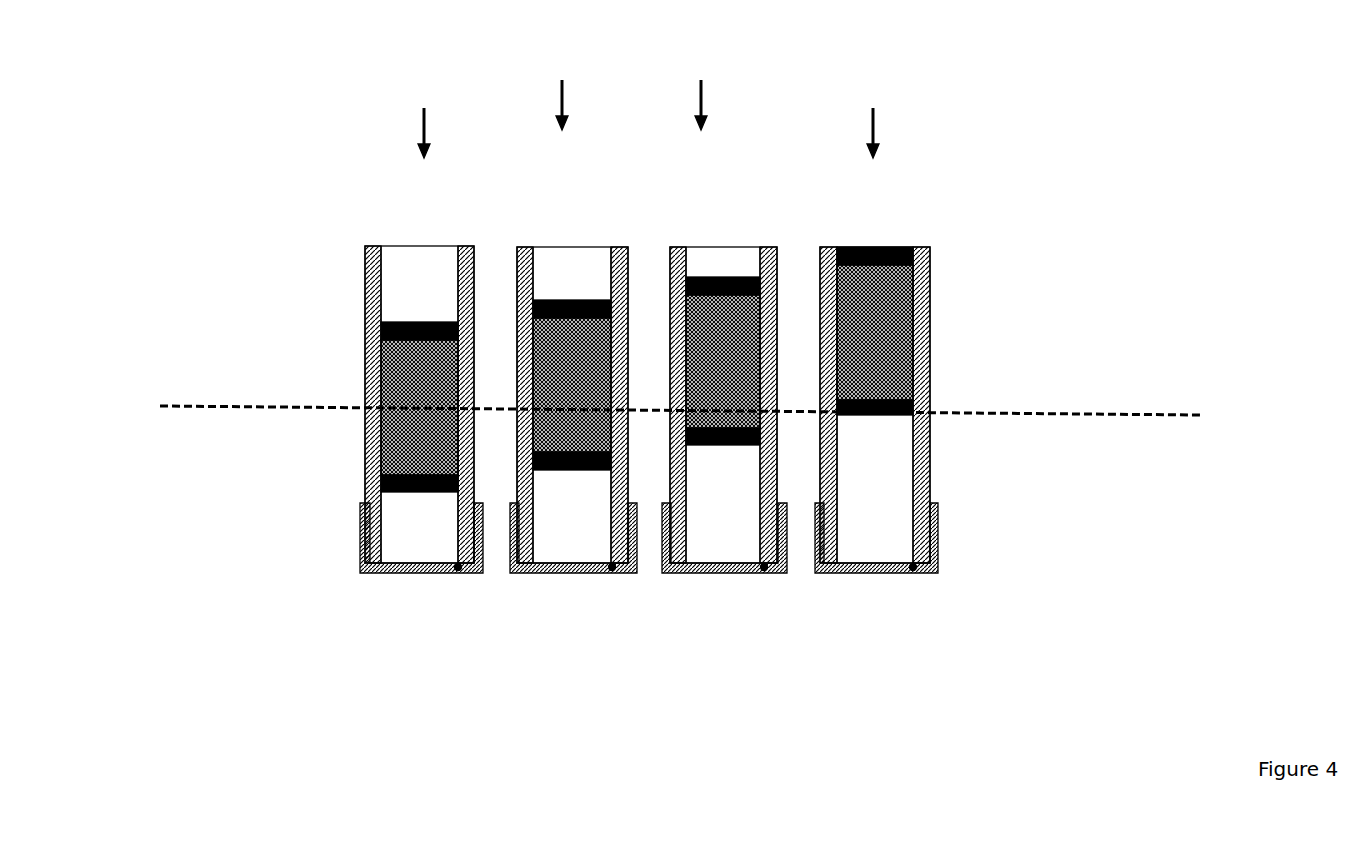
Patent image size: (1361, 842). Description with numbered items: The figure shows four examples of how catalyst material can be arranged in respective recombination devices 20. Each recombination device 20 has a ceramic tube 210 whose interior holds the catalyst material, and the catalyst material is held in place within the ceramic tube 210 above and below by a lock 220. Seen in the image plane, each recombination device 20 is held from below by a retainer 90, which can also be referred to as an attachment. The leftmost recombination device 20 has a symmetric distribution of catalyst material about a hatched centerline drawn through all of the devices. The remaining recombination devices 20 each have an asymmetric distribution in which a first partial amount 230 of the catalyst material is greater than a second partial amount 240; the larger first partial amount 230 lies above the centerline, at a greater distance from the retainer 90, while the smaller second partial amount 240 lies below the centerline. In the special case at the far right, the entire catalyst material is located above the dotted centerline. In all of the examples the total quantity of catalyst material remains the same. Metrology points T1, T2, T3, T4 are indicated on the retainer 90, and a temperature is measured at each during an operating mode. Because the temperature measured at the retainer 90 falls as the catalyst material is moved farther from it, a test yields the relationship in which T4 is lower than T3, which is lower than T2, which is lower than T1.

The recombination device 20 is at (646, 99).
The retainer 90 is at (838, 576).
The ceramic tube 210 is at (468, 263).
The lock 220 is at (878, 426).
The first partial amount 230 is at (448, 358).
The second partial amount 240 is at (541, 435).
The metrology point T1 is at (458, 567).
The metrology point T2 is at (612, 567).
The metrology point T3 is at (764, 567).
The metrology point T4 is at (913, 567).